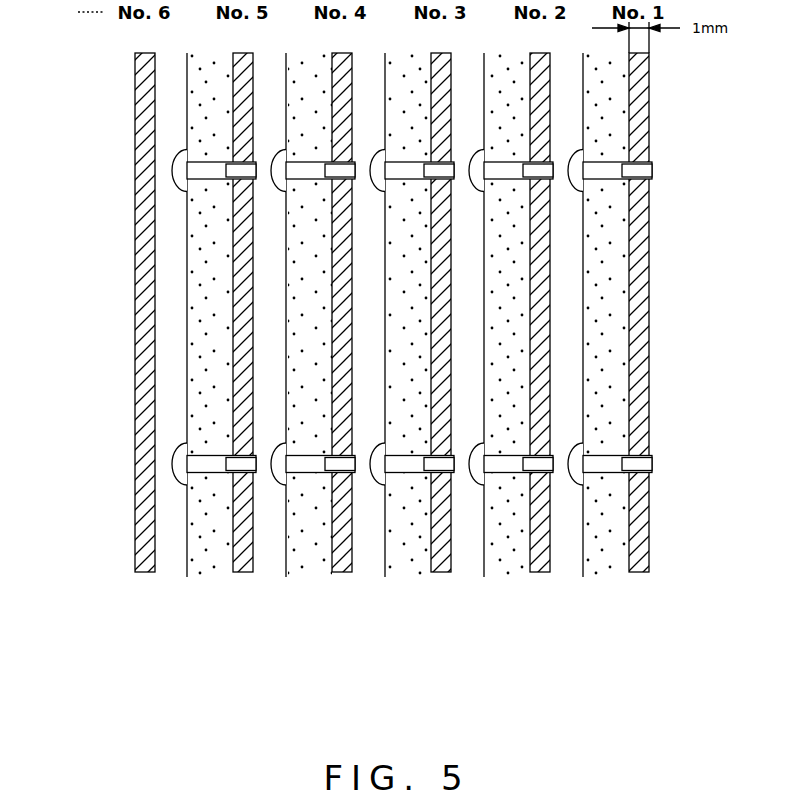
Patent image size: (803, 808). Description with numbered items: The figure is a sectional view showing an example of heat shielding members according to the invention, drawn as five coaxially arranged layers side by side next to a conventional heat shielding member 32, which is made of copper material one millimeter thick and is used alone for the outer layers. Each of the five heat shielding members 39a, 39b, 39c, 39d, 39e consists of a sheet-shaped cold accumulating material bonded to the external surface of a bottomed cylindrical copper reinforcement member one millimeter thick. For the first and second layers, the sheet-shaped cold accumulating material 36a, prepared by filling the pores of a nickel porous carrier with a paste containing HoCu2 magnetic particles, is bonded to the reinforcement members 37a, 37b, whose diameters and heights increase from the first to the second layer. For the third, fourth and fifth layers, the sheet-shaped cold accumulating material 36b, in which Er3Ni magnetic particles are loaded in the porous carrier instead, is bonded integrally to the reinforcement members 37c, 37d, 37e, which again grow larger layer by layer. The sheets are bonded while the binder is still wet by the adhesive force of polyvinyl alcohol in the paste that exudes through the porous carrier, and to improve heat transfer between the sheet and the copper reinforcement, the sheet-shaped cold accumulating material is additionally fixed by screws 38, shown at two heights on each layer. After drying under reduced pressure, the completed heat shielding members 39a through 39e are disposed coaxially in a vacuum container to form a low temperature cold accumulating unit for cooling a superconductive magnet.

The conventional heat shielding member 32 is at (135, 500).
The sheet-shaped cold accumulating material 36a is at (503, 553).
The sheet-shaped cold accumulating material 36b is at (208, 553).
The reinforcement member 37a is at (630, 560).
The reinforcement member 37b is at (530, 560).
The reinforcement member 37c is at (433, 560).
The reinforcement member 37d is at (333, 560).
The reinforcement member 37e is at (240, 571).
The screw 38 is at (172, 165).
The heat shielding member 39a is at (587, 375).
The heat shielding member 39b is at (489, 383).
The heat shielding member 39c is at (389, 375).
The heat shielding member 39d is at (290, 383).
The heat shielding member 39e is at (191, 376).